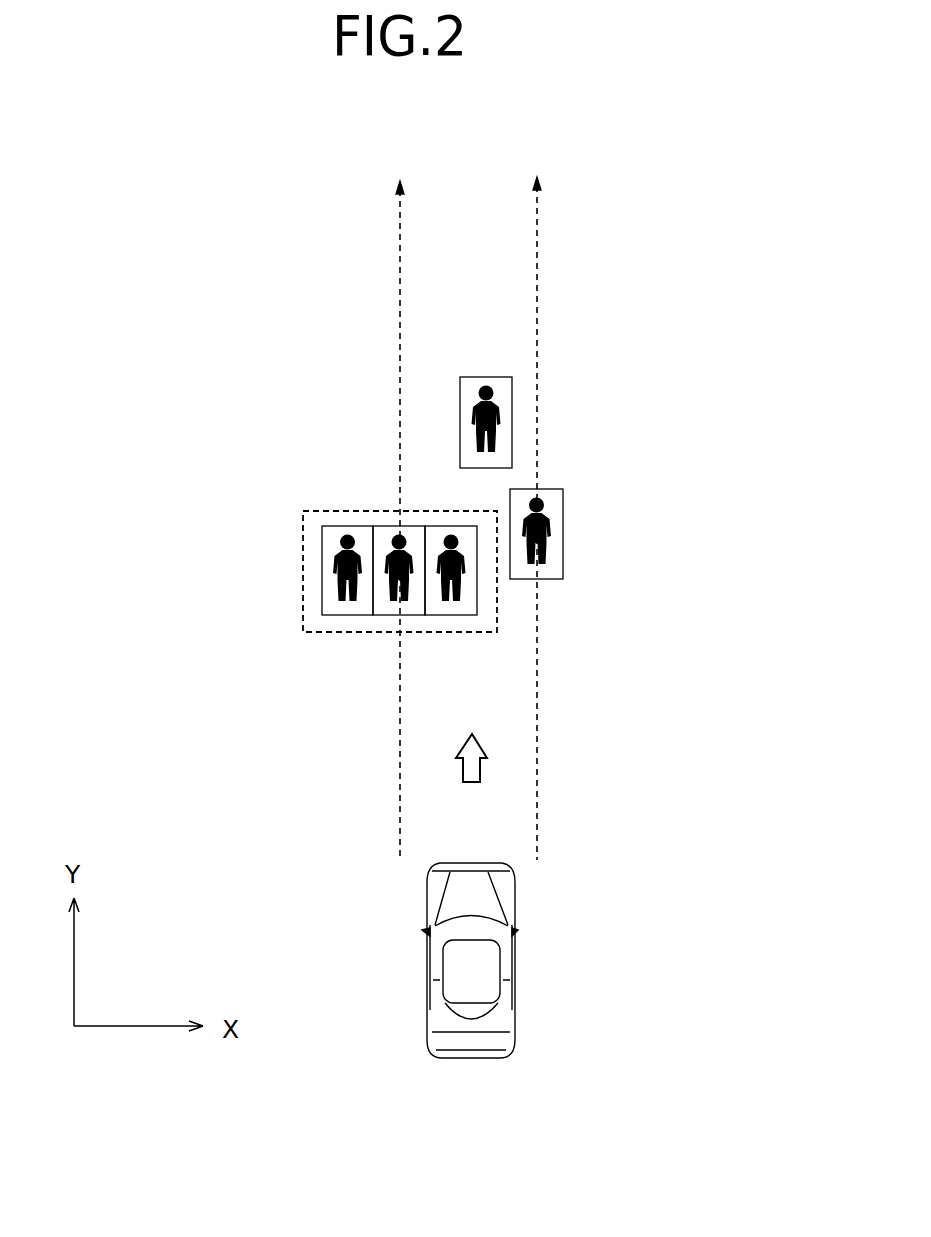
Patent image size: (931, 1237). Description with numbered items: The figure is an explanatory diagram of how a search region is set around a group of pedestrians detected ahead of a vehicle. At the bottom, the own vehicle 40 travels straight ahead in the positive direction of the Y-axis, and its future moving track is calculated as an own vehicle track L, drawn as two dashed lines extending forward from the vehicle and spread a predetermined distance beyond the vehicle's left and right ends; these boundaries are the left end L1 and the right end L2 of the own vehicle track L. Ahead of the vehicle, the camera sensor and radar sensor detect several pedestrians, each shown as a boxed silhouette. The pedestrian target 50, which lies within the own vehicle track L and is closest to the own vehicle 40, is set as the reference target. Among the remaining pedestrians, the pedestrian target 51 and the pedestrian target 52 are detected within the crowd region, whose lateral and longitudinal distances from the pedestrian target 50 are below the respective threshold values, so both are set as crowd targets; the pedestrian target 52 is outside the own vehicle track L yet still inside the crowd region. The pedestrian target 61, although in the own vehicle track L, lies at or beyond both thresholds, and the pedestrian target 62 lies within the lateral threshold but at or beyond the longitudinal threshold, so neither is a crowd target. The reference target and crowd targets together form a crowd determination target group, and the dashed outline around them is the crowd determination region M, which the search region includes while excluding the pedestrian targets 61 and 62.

The own vehicle 40 is at (512, 968).
The pedestrian target 50 is at (453, 525).
The pedestrian target 51 is at (398, 525).
The pedestrian target 52 is at (347, 525).
The pedestrian target 61 is at (562, 513).
The pedestrian target 62 is at (513, 397).
The own vehicle track L is at (497, 124).
The left end of own vehicle track L1 is at (537, 257).
The right end of own vehicle track L2 is at (400, 253).
The crowd determination region M is at (303, 578).